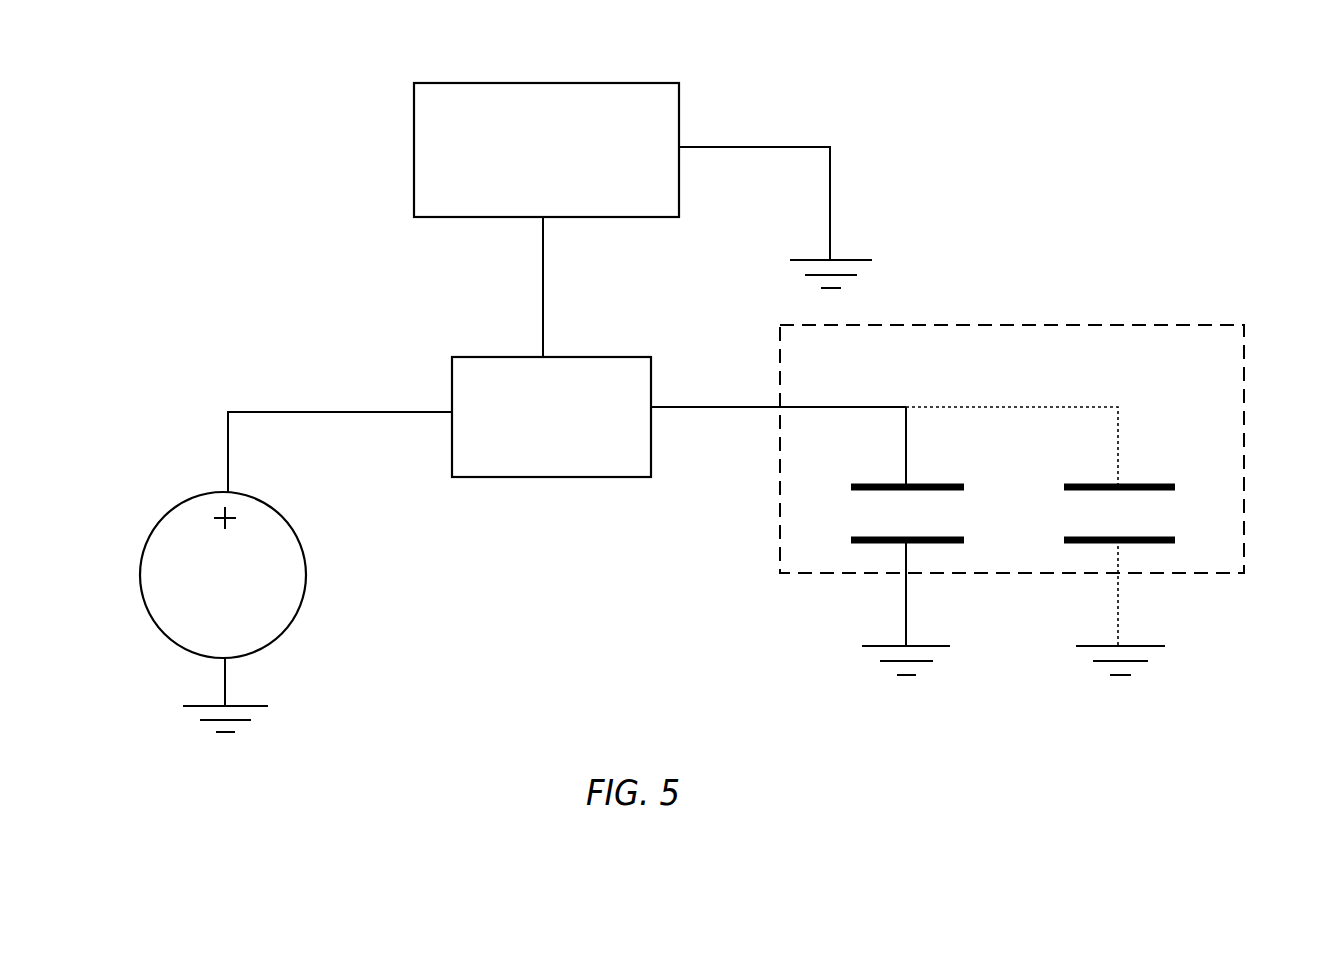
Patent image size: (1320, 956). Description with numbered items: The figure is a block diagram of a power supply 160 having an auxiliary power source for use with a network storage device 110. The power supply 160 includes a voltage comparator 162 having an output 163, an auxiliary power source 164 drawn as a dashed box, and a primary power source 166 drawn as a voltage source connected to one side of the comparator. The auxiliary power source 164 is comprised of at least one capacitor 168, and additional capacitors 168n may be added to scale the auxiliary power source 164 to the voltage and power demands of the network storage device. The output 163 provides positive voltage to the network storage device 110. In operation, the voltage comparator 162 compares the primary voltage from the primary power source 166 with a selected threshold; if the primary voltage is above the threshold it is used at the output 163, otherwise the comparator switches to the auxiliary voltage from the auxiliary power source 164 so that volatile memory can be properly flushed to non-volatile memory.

The power supply 160 is at (270, 157).
The network storage device 110 is at (679, 103).
The output 163 is at (543, 320).
The voltage comparator 162 is at (651, 375).
The primary power source 166 is at (148, 541).
The auxiliary power source 164 is at (1244, 328).
The capacitor 168 is at (925, 485).
The additional capacitors 168n is at (1138, 485).